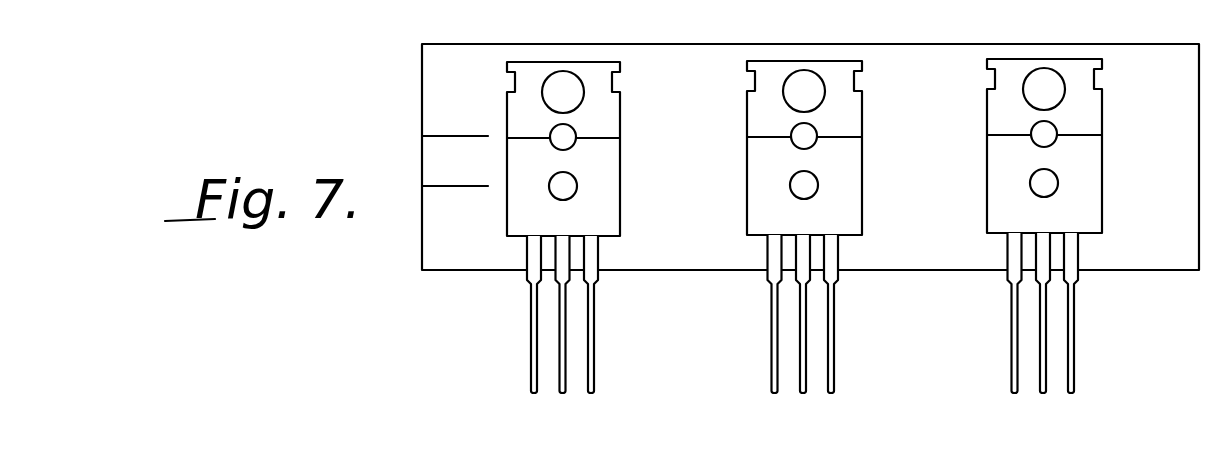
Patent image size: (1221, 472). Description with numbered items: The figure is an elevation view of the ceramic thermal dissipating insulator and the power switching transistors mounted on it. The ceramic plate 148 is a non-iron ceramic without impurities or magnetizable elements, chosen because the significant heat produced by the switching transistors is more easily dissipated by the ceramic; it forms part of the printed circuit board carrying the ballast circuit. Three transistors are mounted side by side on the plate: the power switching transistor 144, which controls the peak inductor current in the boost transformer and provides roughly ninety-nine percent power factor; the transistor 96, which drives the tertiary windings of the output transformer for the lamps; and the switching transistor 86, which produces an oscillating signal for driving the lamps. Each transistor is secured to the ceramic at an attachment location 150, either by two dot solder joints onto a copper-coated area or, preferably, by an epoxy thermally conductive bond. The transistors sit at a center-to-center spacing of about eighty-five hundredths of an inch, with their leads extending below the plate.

The circuit board 148 is at (468, 267).
The transistor mounting tab 150 is at (507, 110).
The power switching transistor Q1 144 is at (620, 170).
The transistor Q3 96 is at (862, 168).
The switching transistor Q2 86 is at (1102, 172).